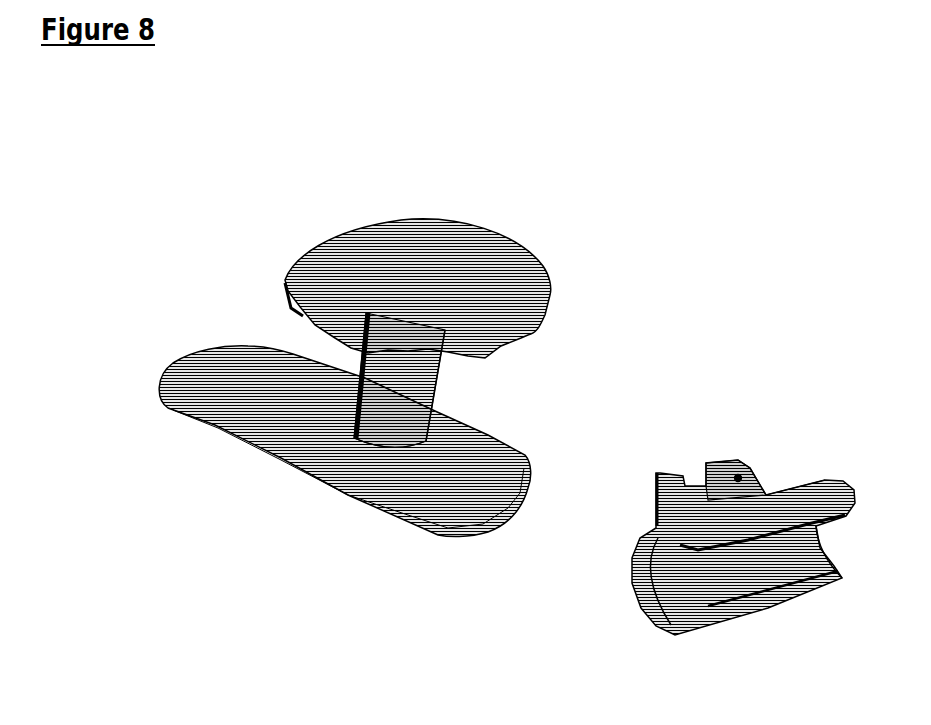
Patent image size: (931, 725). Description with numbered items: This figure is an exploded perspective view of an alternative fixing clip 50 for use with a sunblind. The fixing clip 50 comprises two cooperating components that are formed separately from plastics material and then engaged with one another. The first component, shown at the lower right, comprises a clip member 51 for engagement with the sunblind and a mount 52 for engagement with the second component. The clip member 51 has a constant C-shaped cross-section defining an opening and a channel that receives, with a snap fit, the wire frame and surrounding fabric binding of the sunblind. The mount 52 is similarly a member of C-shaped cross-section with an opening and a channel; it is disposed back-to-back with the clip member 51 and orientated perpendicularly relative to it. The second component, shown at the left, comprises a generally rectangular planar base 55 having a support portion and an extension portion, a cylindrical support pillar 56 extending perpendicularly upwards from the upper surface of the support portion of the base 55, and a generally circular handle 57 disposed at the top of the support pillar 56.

The fixing clip 50 is at (687, 383).
The clip member 51 is at (640, 587).
The mount 52 is at (737, 457).
The base 55 is at (223, 388).
The support pillar 56 is at (400, 385).
The handle 57 is at (403, 222).